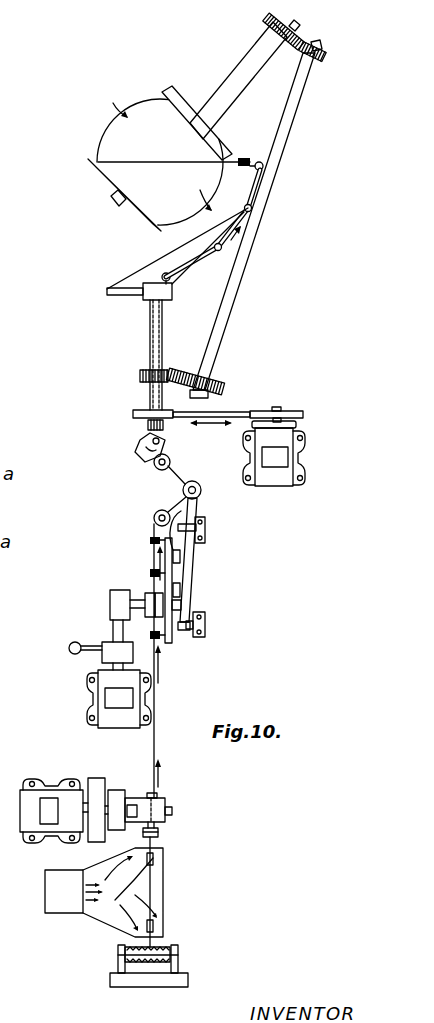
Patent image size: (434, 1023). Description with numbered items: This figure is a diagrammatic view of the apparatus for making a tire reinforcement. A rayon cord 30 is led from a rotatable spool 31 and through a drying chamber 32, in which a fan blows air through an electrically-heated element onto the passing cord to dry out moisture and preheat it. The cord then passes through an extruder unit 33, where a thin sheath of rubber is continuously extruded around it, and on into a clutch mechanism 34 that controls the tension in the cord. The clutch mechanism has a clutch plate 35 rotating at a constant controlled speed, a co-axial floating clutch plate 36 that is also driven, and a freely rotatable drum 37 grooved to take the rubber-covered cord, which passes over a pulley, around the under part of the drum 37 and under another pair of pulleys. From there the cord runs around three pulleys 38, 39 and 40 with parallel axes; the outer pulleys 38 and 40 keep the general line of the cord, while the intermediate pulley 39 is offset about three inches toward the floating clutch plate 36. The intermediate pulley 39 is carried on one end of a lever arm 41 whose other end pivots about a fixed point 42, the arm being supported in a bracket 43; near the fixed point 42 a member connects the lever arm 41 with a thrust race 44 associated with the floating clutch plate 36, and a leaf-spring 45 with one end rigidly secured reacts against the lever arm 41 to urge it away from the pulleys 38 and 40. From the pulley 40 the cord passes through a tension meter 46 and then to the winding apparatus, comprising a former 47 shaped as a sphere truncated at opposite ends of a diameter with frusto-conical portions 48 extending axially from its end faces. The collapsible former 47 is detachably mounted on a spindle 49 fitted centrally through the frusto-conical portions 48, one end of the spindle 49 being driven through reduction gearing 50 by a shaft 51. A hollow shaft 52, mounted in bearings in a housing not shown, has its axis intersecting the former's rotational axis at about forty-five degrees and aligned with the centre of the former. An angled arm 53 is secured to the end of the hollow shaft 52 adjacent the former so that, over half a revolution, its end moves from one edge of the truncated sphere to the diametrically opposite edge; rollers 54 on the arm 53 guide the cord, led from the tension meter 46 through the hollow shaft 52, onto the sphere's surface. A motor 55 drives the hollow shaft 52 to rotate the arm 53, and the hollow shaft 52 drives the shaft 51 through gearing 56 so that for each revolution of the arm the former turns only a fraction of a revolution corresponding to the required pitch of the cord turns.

The rayon cord 30 is at (134, 937).
The rotatable spool 31 is at (163, 946).
The drying chamber 32 is at (165, 887).
The extruder unit 33 is at (168, 799).
The clutch mechanism 34 is at (199, 590).
The clutch plate 35 is at (112, 626).
The floating clutch plate 36 is at (160, 641).
The freely rotatable drum 37 is at (149, 593).
The pulley 38 is at (153, 517).
The intermediate pulley 39 is at (203, 490).
The pulley 40 is at (155, 467).
The lever arm 41 is at (189, 566).
The fixed point 42 is at (196, 638).
The bracket 43 is at (206, 527).
The thrust race 44 is at (182, 606).
The leaf-spring 45 is at (180, 530).
The tension meter 46 is at (160, 440).
The former 47 is at (98, 140).
The frusto-conical portions 48 is at (207, 137).
The spindle 49 is at (226, 100).
The reduction gearing 50 is at (306, 38).
The shaft 51 is at (276, 173).
The hollow shaft 52 is at (163, 322).
The arm 53 is at (243, 213).
The rollers 54 is at (257, 162).
The motor 55 is at (250, 427).
The gearing 56 is at (170, 368).